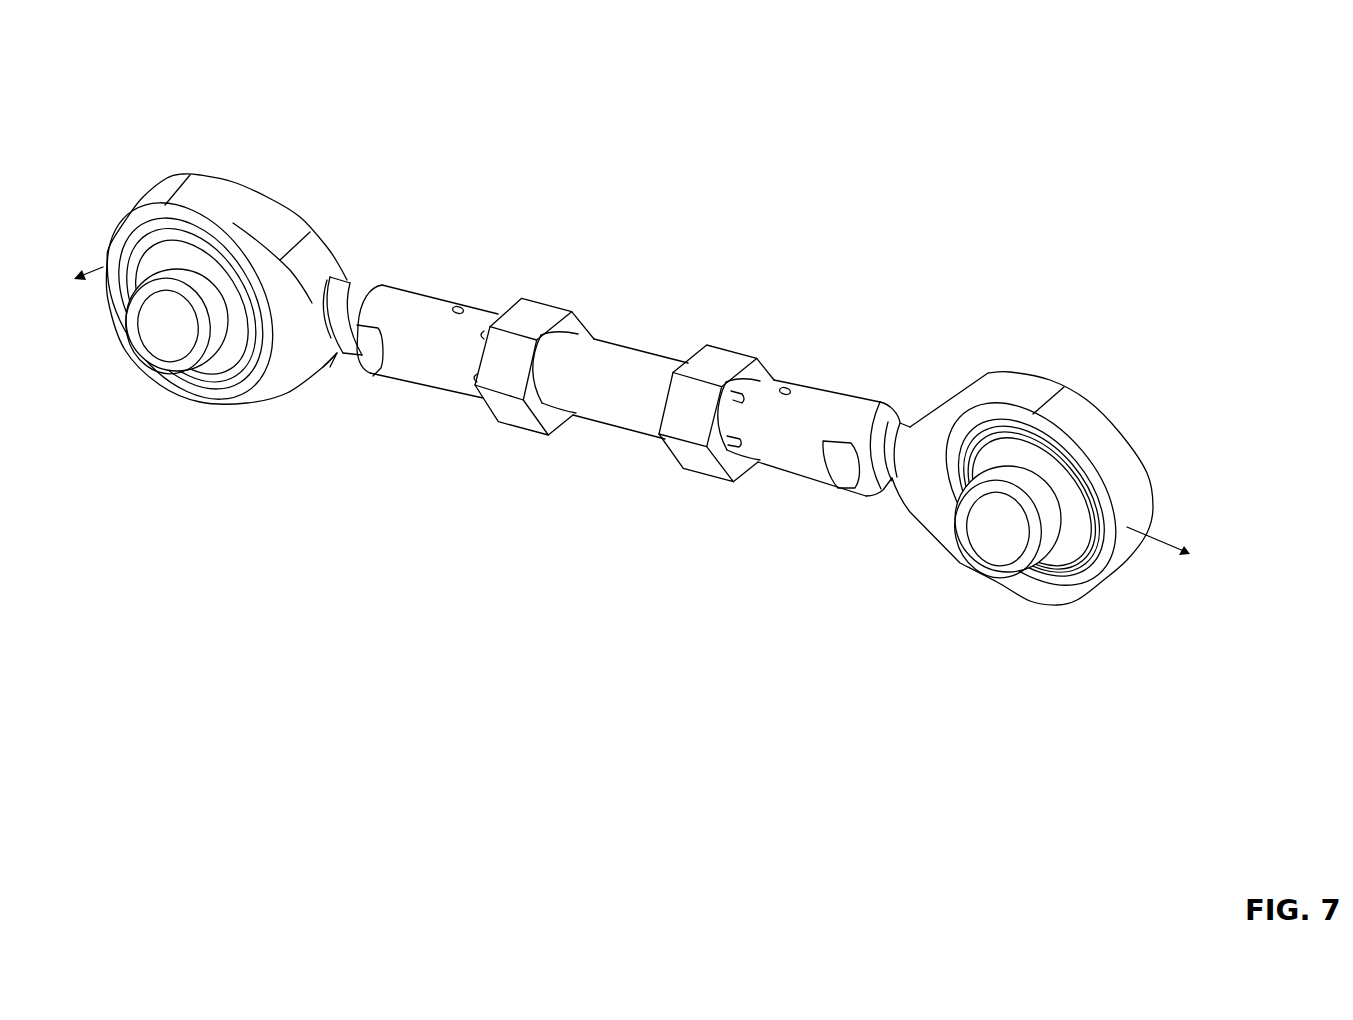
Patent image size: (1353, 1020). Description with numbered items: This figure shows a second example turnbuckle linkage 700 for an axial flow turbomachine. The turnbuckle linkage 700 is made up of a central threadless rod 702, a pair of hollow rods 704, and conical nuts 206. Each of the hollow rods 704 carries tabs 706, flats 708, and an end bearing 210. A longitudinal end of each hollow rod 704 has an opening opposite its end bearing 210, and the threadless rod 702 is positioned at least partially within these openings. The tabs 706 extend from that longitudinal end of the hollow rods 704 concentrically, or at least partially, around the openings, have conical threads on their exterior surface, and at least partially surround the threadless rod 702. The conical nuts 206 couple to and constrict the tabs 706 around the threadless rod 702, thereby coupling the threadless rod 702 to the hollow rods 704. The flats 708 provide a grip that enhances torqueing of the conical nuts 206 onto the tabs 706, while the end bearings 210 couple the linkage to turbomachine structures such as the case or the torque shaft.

The turnbuckle linkage 700 is at (1062, 54).
The hollow rods 704 is at (420, 290).
The threadless rod 702 is at (628, 345).
The conical nuts 206 is at (737, 345).
The tabs 706 is at (723, 457).
The flats 708 is at (832, 488).
The end bearing 210 is at (1090, 402).